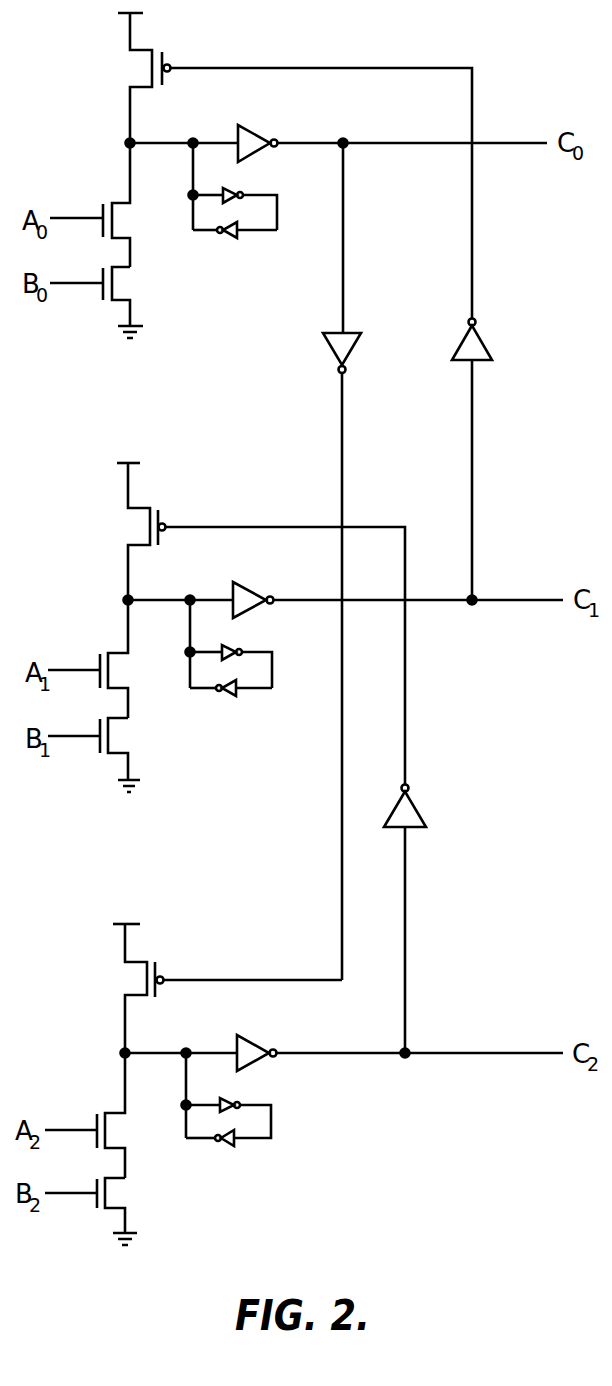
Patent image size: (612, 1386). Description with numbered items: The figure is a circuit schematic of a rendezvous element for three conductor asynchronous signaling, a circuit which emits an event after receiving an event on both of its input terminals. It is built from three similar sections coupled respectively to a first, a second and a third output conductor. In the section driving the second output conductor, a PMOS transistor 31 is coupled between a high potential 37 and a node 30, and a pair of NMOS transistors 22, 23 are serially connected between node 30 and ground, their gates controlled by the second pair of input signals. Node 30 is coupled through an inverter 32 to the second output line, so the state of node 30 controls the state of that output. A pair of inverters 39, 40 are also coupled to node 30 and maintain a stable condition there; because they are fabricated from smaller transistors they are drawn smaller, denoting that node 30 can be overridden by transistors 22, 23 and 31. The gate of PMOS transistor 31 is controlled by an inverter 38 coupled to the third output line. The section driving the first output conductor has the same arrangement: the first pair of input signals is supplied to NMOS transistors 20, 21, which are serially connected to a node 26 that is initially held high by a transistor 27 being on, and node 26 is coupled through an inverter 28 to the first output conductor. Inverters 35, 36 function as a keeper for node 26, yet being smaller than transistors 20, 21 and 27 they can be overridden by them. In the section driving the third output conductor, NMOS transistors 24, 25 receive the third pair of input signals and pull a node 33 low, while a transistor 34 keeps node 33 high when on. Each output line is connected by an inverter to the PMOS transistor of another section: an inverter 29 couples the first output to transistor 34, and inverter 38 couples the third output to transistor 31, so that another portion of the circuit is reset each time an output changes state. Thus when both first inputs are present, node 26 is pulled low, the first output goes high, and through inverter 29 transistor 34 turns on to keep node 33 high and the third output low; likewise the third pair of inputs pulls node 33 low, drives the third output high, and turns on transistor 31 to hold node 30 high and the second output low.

The NMOS transistor 20 is at (128, 222).
The NMOS transistor 21 is at (128, 283).
The NMOS transistor 22 is at (125, 673).
The NMOS transistor 23 is at (125, 738).
The NMOS transistor 24 is at (128, 1137).
The NMOS transistor 25 is at (128, 1195).
The node 26 is at (127, 143).
The transistor 27 is at (160, 50).
The inverter 28 is at (256, 126).
The inverter 29 is at (356, 333).
The node 30 is at (125, 600).
The PMOS transistor 31 is at (160, 510).
The inverter 32 is at (250, 582).
The node 33 is at (122, 1053).
The transistor 34 is at (152, 960).
The inverter 35 is at (233, 188).
The inverter 36 is at (240, 234).
The high potential 37 is at (140, 463).
The inverter 38 is at (413, 810).
The inverter 39 is at (240, 645).
The inverter 40 is at (237, 694).